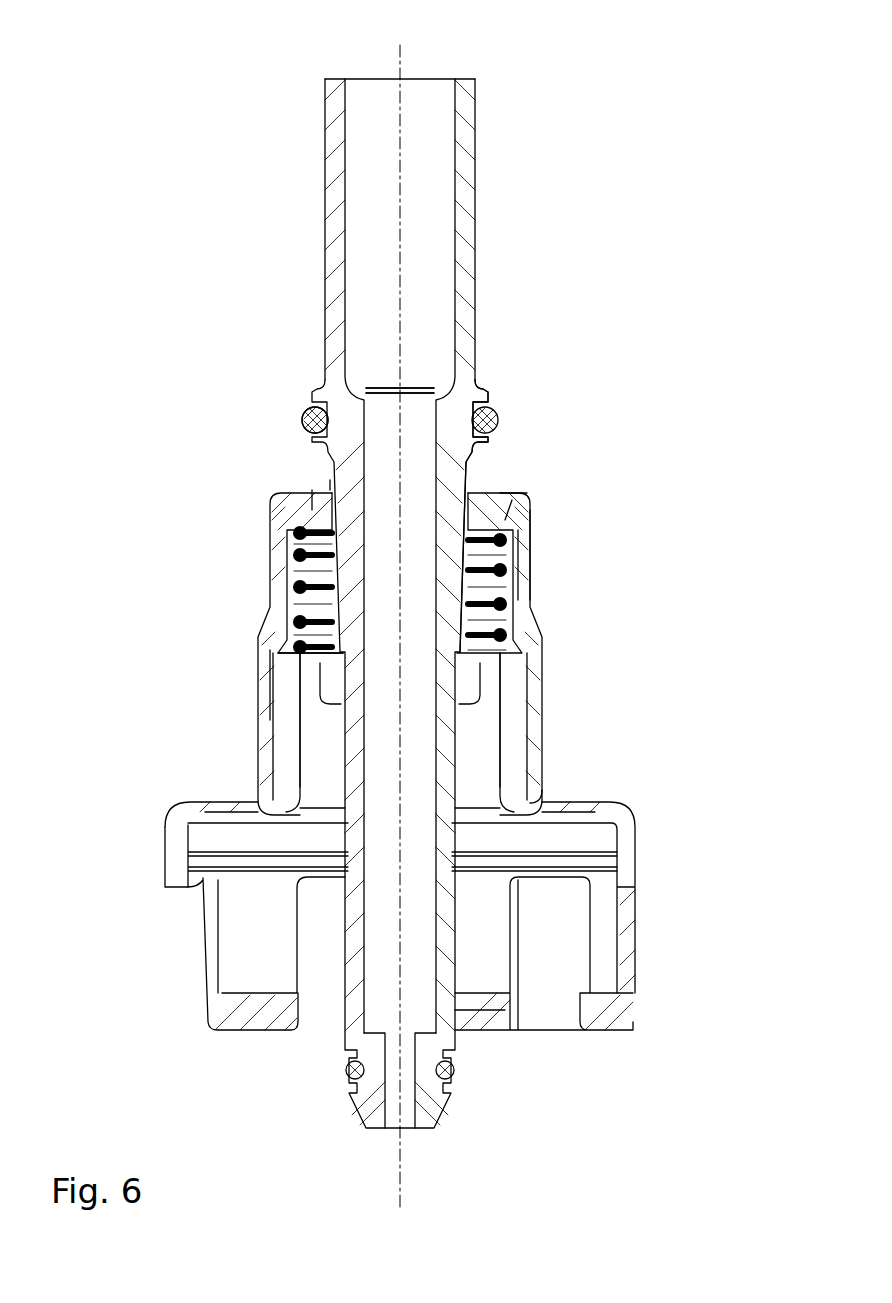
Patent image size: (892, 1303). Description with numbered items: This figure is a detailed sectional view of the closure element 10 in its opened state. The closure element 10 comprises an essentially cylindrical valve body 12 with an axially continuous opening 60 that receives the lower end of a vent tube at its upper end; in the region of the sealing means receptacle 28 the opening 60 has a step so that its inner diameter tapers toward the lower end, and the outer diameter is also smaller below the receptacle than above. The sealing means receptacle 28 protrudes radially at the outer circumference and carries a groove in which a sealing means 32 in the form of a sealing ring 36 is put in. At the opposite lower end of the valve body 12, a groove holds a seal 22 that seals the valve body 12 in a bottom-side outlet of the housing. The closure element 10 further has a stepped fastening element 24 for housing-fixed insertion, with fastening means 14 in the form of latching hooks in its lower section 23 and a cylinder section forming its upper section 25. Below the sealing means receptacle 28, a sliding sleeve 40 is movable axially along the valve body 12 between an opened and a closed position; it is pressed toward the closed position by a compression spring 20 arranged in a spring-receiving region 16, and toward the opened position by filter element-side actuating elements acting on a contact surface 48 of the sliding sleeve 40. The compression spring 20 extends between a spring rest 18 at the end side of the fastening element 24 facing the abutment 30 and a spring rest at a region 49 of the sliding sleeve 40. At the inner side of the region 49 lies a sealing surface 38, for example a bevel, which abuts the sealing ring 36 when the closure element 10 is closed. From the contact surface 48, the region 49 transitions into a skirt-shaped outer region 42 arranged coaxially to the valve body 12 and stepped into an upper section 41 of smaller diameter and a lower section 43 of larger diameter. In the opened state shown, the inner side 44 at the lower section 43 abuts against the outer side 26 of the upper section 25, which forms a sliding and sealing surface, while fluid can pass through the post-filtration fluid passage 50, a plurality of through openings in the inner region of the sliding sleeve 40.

The closure element 10 is at (138, 121).
The valve body 12 is at (462, 322).
The fastening means 14 is at (210, 990).
The spring-receiving region 16 is at (492, 618).
The spring rest 18 is at (300, 650).
The compression spring 20 is at (292, 556).
The seal 22 is at (462, 1070).
The lower section 23 is at (637, 858).
The fastening element 24 is at (165, 850).
The upper section 25 is at (522, 738).
The outer side 26 is at (278, 710).
The sealing means receptacle 28 is at (492, 406).
The abutment 30 is at (504, 430).
The sealing means 32 is at (300, 418).
The sealing ring 36 is at (315, 420).
The sealing surface 38 is at (314, 503).
The sliding sleeve 40 is at (535, 578).
The upper section 41 is at (532, 556).
The skirt-shaped outer region 42 is at (532, 538).
The lower section 43 is at (522, 690).
The inner side 44 is at (290, 722).
The contact surface 48 is at (508, 493).
The region 49 is at (513, 515).
The post-filtration fluid passage 50 is at (323, 482).
The axially continuous opening 60 is at (380, 213).